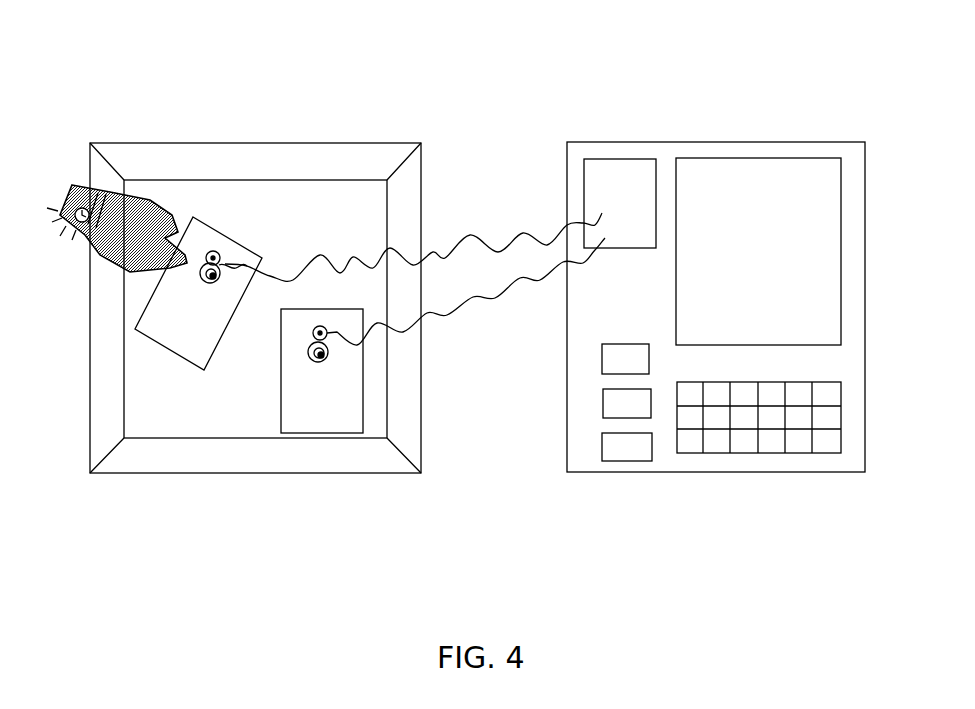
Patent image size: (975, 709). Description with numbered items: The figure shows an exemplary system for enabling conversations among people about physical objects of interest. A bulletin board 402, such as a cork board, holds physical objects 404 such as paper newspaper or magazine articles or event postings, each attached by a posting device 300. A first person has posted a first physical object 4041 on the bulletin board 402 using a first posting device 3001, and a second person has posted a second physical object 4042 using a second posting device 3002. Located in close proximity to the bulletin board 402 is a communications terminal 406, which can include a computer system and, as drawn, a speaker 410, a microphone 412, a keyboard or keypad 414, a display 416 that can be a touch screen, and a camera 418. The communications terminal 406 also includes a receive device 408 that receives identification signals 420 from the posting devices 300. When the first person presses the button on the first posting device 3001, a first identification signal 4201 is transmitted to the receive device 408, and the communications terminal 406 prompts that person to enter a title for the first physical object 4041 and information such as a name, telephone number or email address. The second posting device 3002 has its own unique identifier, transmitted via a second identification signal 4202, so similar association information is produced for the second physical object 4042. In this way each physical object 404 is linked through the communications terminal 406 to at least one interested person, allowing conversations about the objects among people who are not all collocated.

The posting device 300 is at (342, 254).
The first posting device 3001 is at (210, 253).
The second posting device 3002 is at (333, 354).
The bulletin board 402 is at (155, 403).
The physical object 404 is at (195, 372).
The first physical object 4041 is at (158, 318).
The second physical object 4042 is at (312, 414).
The communications terminal 406 is at (724, 78).
The receive device 408 is at (612, 179).
The speaker 410 is at (620, 447).
The microphone 412 is at (612, 404).
The keyboard or keypad 414 is at (775, 420).
The display 416 is at (808, 243).
The camera 418 is at (613, 365).
The identification signal 420 is at (415, 269).
The first identification signal 4201 is at (470, 237).
The second identification signal 4202 is at (472, 291).